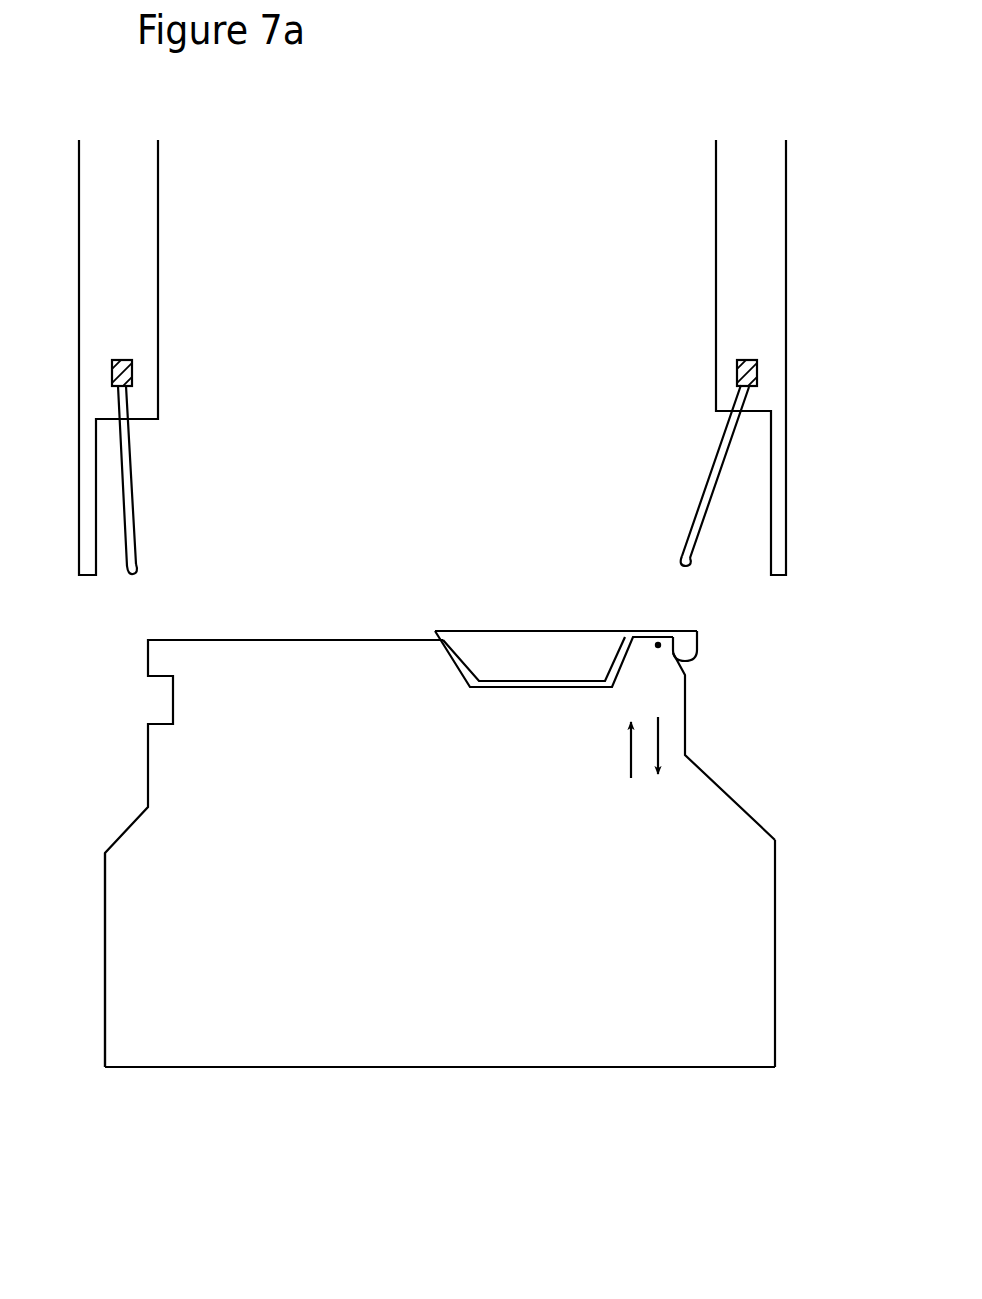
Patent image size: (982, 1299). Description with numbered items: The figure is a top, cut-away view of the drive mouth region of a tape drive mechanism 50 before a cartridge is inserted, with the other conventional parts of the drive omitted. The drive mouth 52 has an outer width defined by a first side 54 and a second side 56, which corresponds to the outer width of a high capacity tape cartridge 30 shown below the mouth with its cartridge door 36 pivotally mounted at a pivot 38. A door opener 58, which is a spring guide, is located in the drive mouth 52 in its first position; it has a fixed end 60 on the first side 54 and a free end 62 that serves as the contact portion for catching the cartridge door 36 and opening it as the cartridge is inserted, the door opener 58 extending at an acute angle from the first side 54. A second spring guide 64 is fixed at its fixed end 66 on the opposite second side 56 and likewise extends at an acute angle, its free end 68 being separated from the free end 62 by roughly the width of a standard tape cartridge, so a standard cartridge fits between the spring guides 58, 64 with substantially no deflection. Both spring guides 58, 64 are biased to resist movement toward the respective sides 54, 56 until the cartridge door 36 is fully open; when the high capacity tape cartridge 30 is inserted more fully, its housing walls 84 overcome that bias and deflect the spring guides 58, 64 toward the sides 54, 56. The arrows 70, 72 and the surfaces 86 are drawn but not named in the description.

The high capacity tape cartridge 30 is at (442, 1084).
The cartridge door 36 is at (527, 631).
The pivot 38 is at (657, 643).
The tape drive mechanism 50 is at (769, 357).
The drive mouth 52 is at (117, 406).
The first side 54 is at (786, 518).
The second side 56 is at (79, 523).
The door opener 58 is at (712, 462).
The fixed end 60 is at (742, 358).
The free end 62 is at (694, 562).
The second spring guide 64 is at (137, 461).
The fixed end 66 is at (118, 358).
The free end 68 is at (142, 569).
The upward movement arrow 70 is at (631, 760).
The downward movement arrow 72 is at (660, 737).
The housing walls 84 is at (733, 800).
The side wall 86 is at (775, 920).